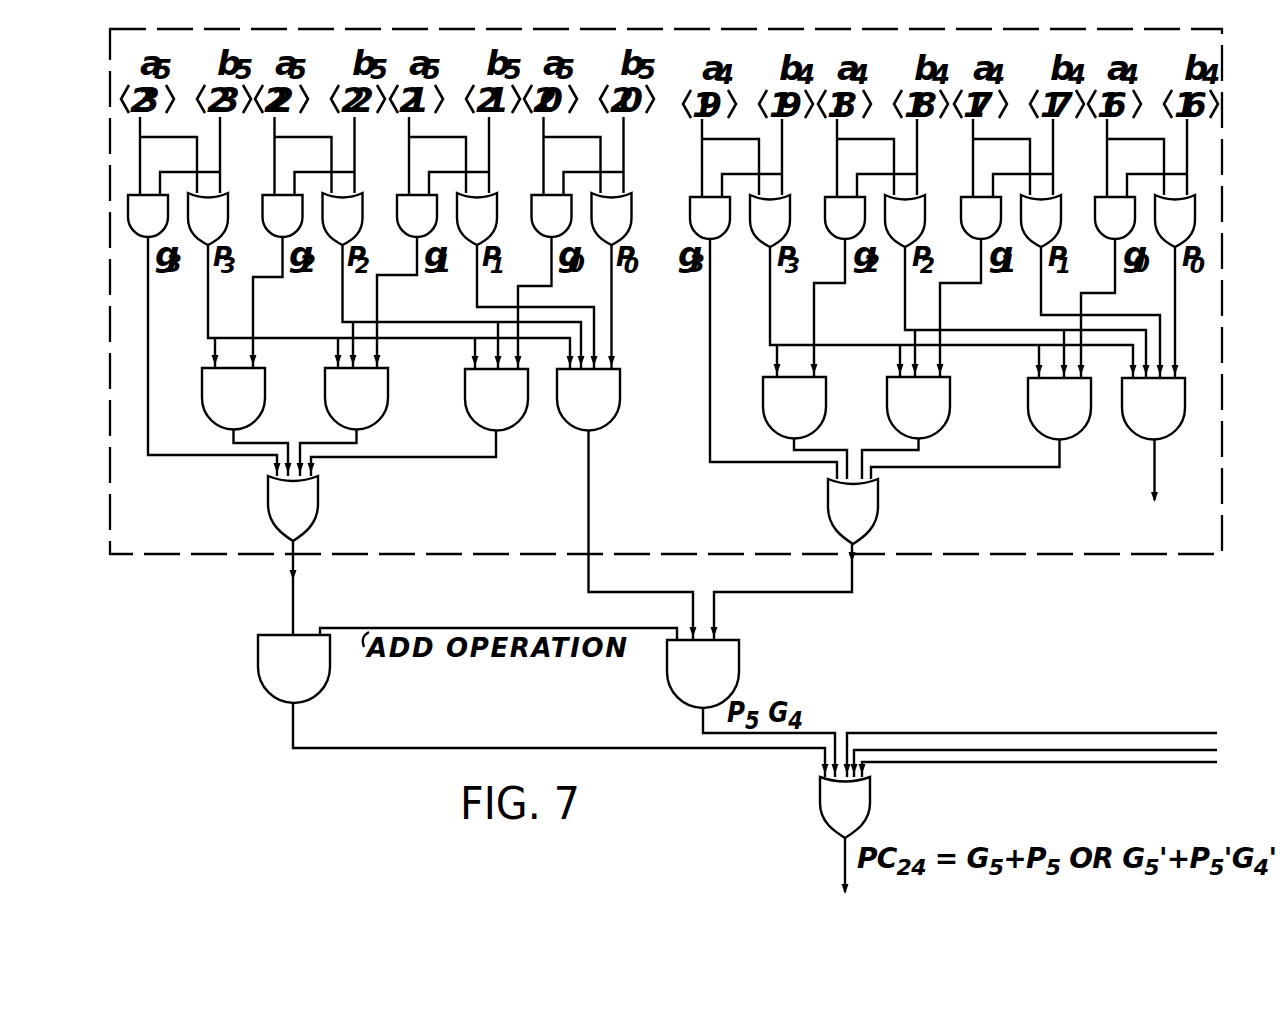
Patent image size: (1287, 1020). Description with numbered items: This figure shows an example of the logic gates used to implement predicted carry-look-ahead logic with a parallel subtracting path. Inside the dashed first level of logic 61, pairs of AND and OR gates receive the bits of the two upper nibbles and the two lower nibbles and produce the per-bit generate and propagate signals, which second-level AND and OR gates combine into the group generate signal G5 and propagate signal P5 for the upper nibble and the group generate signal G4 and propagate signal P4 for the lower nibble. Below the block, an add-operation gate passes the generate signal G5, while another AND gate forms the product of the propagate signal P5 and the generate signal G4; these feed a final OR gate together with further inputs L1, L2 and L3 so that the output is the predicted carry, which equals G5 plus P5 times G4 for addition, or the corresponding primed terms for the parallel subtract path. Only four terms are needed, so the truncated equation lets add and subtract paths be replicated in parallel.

The first level of logic 61 is at (192, 560).
The generate signal G5 is at (314, 555).
The generate signal G4 is at (806, 559).
The propagate signal P5 is at (643, 535).
The propagate signal P4 is at (1170, 471).
The control line L1 is at (1046, 740).
The control line L2 is at (1050, 752).
The control line L3 is at (1054, 768).